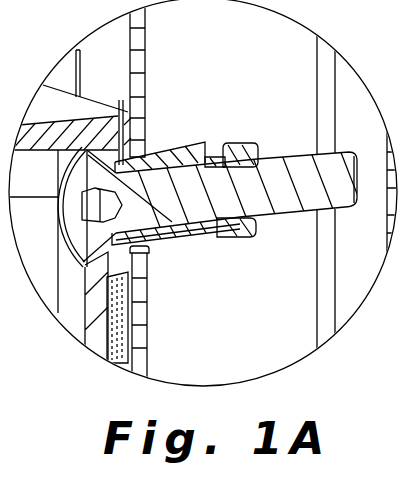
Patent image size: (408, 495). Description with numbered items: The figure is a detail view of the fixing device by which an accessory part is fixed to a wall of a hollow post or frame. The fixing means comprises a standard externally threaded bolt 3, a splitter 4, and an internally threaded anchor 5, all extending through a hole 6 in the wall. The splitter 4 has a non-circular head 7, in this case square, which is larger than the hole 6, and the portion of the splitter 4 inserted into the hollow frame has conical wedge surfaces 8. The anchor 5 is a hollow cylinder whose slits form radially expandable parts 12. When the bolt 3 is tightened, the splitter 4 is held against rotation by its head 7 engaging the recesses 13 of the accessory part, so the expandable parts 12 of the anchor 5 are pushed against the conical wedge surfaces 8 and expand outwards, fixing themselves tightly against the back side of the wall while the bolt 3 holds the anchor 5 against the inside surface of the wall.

The bolt 3 is at (218, 217).
The splitter 4 is at (153, 163).
The anchor 5 is at (238, 150).
The hole 6 is at (152, 249).
The non-circular head 7 is at (126, 161).
The conical wedge surfaces 8 is at (190, 222).
The radially expandable parts 12 is at (188, 157).
The recesses 13 is at (116, 107).